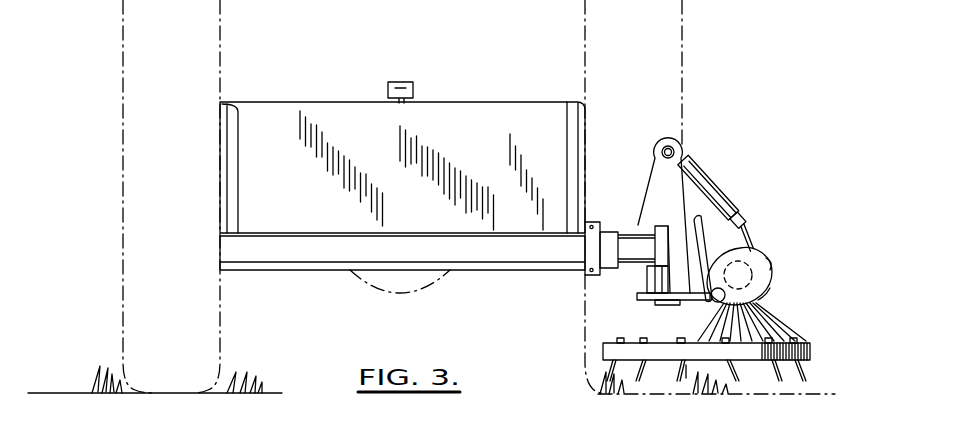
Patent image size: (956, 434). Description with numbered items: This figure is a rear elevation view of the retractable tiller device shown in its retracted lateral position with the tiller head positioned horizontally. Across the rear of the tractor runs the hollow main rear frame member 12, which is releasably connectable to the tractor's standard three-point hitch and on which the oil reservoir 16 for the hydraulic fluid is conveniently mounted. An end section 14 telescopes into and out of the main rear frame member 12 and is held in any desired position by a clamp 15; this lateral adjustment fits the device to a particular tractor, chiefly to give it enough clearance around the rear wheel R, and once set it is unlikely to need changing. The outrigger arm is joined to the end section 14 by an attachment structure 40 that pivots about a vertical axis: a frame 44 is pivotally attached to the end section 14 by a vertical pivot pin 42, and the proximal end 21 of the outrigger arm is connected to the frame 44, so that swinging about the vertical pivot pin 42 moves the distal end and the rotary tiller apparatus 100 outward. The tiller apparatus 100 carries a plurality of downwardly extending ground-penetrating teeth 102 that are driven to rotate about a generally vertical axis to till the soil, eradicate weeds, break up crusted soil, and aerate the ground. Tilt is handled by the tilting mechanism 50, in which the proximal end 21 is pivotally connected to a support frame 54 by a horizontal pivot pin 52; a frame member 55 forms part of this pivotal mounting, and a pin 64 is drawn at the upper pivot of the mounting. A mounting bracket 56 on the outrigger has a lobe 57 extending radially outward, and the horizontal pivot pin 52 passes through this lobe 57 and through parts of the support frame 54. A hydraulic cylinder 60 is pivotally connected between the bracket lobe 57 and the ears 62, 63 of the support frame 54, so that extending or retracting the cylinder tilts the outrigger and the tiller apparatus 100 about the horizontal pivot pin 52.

The main rear frame member 12 is at (299, 272).
The end section 14 is at (626, 232).
The clamp 15 is at (586, 278).
The oil reservoir 16 is at (316, 101).
The proximal end 21 is at (755, 248).
The attachment structure 40 is at (636, 220).
The vertical pivot pin 42 is at (646, 283).
The frame 44 is at (637, 297).
The tilting mechanism 50 is at (766, 246).
The horizontal pivot pin 52 is at (713, 302).
The support frame 54 is at (675, 305).
The frame member 55 is at (656, 158).
The mounting bracket 56 is at (793, 324).
The lobe 57 is at (695, 305).
The hydraulic cylinder 60 is at (718, 184).
The ear 62 is at (771, 265).
The ear 63 is at (768, 288).
The pivot pin 64 is at (675, 152).
The rotary tiller apparatus 100 is at (810, 336).
The ground-penetrating teeth 102 is at (777, 372).
The rear wheel R is at (123, 113).